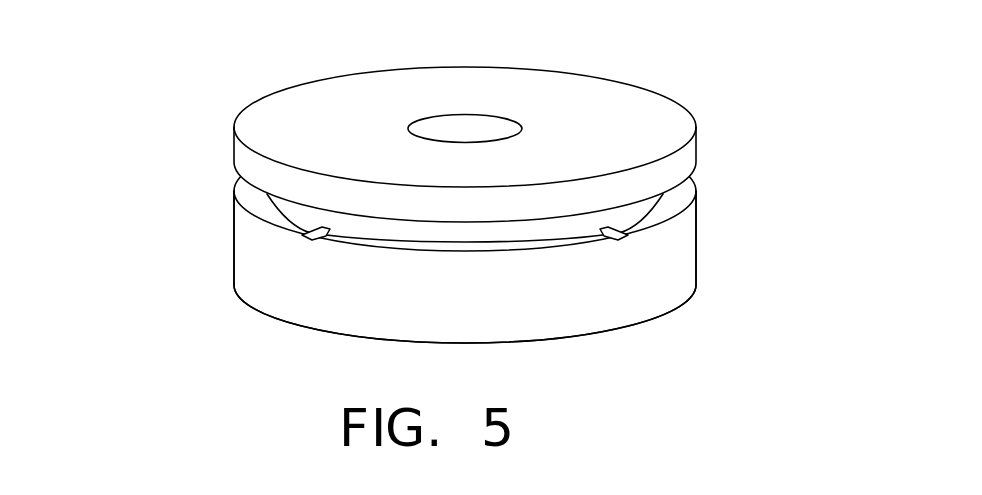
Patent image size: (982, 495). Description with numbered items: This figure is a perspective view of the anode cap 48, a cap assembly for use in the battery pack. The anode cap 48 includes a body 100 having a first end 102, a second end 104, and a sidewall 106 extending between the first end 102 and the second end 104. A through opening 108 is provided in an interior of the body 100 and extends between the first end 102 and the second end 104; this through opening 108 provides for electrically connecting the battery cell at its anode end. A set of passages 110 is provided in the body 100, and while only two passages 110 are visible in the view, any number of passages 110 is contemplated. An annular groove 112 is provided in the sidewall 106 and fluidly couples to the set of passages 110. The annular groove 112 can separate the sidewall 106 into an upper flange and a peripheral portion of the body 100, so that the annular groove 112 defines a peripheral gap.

The anode cap 48 is at (117, 58).
The body 100 is at (685, 257).
The first end 102 is at (624, 106).
The second end 104 is at (615, 330).
The sidewall 106 is at (234, 246).
The through opening 108 is at (478, 128).
The passages 110 is at (317, 241).
The annular groove 112 is at (492, 254).